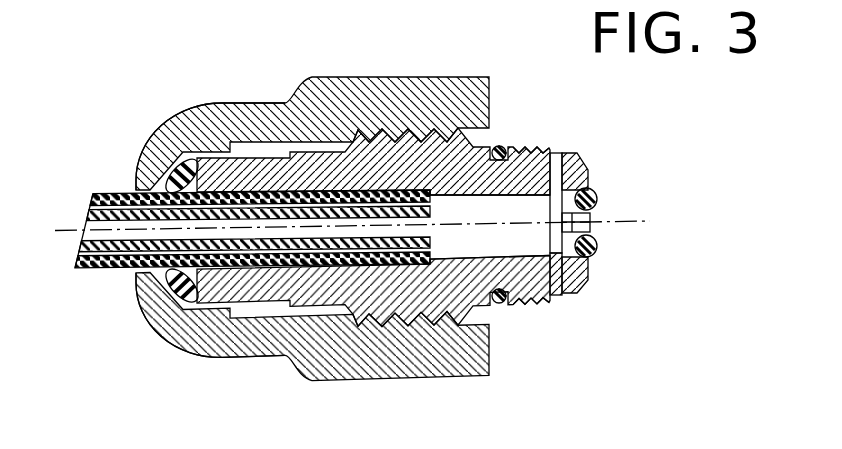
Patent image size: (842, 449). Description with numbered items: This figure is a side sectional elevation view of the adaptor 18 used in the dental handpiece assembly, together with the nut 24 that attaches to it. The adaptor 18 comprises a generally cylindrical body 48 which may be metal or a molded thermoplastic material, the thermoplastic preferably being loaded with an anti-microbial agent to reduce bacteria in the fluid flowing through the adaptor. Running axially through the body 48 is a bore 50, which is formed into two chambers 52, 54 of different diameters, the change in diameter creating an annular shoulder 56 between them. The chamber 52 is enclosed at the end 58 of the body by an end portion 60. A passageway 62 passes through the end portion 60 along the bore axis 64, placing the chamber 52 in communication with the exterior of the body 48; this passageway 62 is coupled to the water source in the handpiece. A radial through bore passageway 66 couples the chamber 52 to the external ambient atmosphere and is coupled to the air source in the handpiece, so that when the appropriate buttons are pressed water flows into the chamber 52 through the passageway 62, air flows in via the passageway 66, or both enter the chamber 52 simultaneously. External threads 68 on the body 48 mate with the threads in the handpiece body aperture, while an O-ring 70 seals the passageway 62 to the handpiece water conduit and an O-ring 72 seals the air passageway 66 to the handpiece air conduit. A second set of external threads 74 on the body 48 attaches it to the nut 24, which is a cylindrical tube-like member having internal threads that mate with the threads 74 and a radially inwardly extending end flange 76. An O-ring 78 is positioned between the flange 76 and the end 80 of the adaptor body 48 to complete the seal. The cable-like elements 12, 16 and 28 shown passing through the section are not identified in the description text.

The coaxial cable 12 is at (102, 270).
The bore of connector body 16 is at (434, 241).
The adaptor 18 is at (258, 137).
The nut 24 is at (224, 50).
The center conductor 28 is at (76, 230).
The body 48 is at (528, 172).
The bore 50 is at (594, 192).
The chamber 52 is at (558, 296).
The chamber 54 is at (224, 192).
The annular shoulder 56 is at (482, 306).
The end 58 is at (584, 276).
The end portion 60 is at (586, 165).
The passageway 62 is at (590, 222).
The axis 64 is at (474, 221).
The radial through bore passageway 66 is at (557, 162).
The external threads 68 is at (538, 150).
The O-ring 70 is at (598, 243).
The O-ring 72 is at (500, 306).
The external threads 74 is at (394, 130).
The end flange 76 is at (146, 159).
The O-ring 78 is at (172, 278).
The end 80 is at (199, 350).